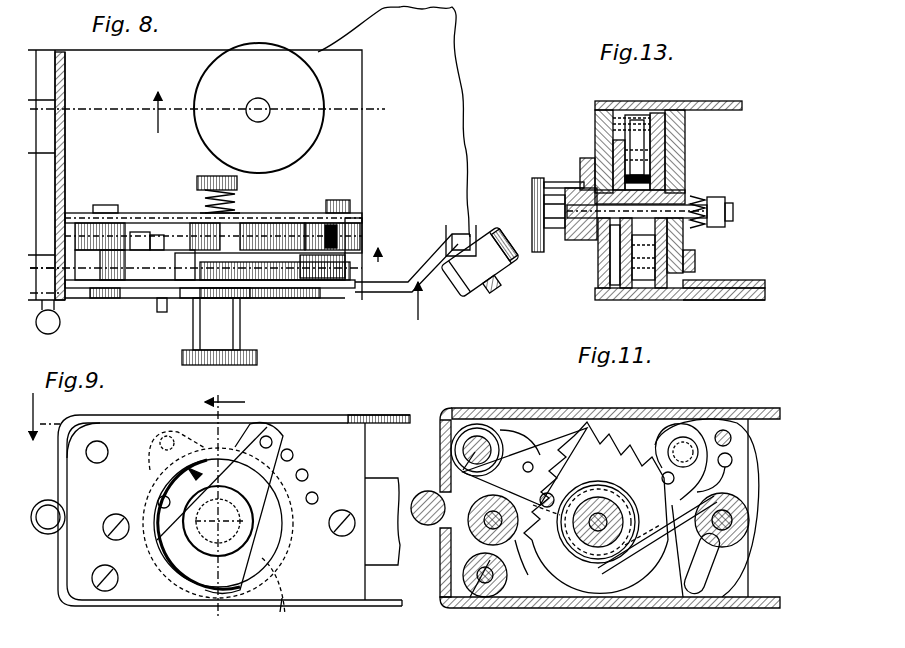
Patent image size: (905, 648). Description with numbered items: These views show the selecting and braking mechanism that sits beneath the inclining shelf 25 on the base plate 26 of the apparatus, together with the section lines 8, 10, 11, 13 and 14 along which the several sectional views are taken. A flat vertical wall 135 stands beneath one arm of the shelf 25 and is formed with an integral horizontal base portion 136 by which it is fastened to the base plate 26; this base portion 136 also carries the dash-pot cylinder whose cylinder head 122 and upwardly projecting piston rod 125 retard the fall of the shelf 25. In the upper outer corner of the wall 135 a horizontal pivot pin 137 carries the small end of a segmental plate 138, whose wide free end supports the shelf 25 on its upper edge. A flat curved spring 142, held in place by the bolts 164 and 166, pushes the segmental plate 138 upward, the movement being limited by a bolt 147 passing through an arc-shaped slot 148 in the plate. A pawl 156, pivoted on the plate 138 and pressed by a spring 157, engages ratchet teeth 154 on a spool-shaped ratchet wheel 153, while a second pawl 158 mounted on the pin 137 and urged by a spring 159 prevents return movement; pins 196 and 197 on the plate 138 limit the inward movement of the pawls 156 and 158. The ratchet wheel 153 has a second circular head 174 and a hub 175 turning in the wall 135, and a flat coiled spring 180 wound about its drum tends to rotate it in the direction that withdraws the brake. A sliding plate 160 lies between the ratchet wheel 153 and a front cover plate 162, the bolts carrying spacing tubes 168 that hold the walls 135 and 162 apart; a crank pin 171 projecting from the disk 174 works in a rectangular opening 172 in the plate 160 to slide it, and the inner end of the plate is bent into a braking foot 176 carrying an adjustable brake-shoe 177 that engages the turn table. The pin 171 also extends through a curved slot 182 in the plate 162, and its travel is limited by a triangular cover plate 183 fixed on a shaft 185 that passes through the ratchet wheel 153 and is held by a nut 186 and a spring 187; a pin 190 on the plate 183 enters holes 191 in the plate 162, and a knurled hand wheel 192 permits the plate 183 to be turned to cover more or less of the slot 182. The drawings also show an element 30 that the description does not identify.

In FIG. 9, the section line 8 is at (40, 416).
In FIG. 8, the section line 10 is at (412, 297).
In FIG. 8, the section line 11 is at (387, 258).
In FIG. 9, the section line 13 is at (225, 495).
In FIG. 8, the section line 14 is at (156, 110).
In FIG. 13, the shelf 25 is at (696, 101).
In FIG. 9, the shelf 25 is at (370, 415).
In FIG. 11, the shelf 25 is at (766, 409).
In FIG. 8, the base plate 26 is at (394, 121).
In FIG. 13, the base plate 26 is at (718, 300).
In FIG. 9, the base plate 26 is at (345, 607).
In FIG. 11, the base plate 26 is at (748, 602).
In FIG. 8, the knob 30 is at (50, 328).
In FIG. 9, the knob 30 is at (46, 533).
In FIG. 11, the knob 30 is at (428, 492).
In FIG. 8, the cylinder head 122 is at (259, 108).
In FIG. 8, the piston rod 125 is at (258, 100).
In FIG. 8, the wall 135 is at (300, 213).
In FIG. 13, the wall 135 is at (682, 152).
In FIG. 8, the supporting base portion 136 is at (350, 152).
In FIG. 13, the supporting base portion 136 is at (736, 280).
In FIG. 9, the pivot pin 137 is at (98, 441).
In FIG. 11, the pivot pin 137 is at (465, 425).
In FIG. 13, the segmental plate 138 is at (730, 101).
In FIG. 11, the segmental plate 138 is at (640, 435).
In FIG. 11, the flat curved spring 142 is at (527, 566).
In FIG. 8, the bolt 147 is at (350, 210).
In FIG. 9, the bolt 147 is at (340, 510).
In FIG. 11, the bolt 147 is at (750, 522).
In FIG. 11, the arc-shaped slot 148 is at (722, 572).
In FIG. 8, the ratchet wheel 153 is at (248, 225).
In FIG. 13, the ratchet wheel 153 is at (683, 306).
In FIG. 11, the ratchet wheel 153 is at (598, 533).
In FIG. 11, the ratchet teeth 154 is at (600, 440).
In FIG. 8, the pawl 156 is at (285, 240).
In FIG. 11, the pawl 156 is at (748, 468).
In FIG. 8, the spring 157 is at (330, 255).
In FIG. 11, the spring 157 is at (735, 460).
In FIG. 8, the second pawl 158 is at (88, 238).
In FIG. 13, the second pawl 158 is at (657, 120).
In FIG. 11, the second pawl 158 is at (490, 428).
In FIG. 8, the spring 159 is at (128, 250).
In FIG. 13, the spring 159 is at (643, 140).
In FIG. 11, the spring 159 is at (522, 440).
In FIG. 8, the sliding plate 160 is at (148, 285).
In FIG. 13, the sliding plate 160 is at (597, 122).
In FIG. 9, the sliding plate 160 is at (385, 485).
In FIG. 8, the front cover plate 162 is at (343, 300).
In FIG. 13, the front cover plate 162 is at (602, 148).
In FIG. 9, the front cover plate 162 is at (234, 510).
In FIG. 9, the bolt 164 is at (108, 518).
In FIG. 11, the bolt 164 is at (485, 528).
In FIG. 9, the bolt 166 is at (102, 590).
In FIG. 11, the bolt 166 is at (471, 593).
In FIG. 8, the spacing tubes 168 is at (152, 235).
In FIG. 13, the spacing tubes 168 is at (606, 300).
In FIG. 11, the spacing tubes 168 is at (478, 570).
In FIG. 8, the crank pin 171 is at (162, 313).
In FIG. 13, the crank pin 171 is at (545, 204).
In FIG. 9, the crank pin 171 is at (158, 499).
In FIG. 11, the crank pin 171 is at (568, 498).
In FIG. 9, the rectangular opening 172 is at (172, 480).
In FIG. 8, the circular disk 174 is at (219, 331).
In FIG. 13, the circular disk 174 is at (630, 300).
In FIG. 9, the circular disk 174 is at (282, 600).
In FIG. 13, the hub 175 is at (695, 245).
In FIG. 8, the braking foot 176 is at (425, 232).
In FIG. 8, the brake-shoe 177 is at (506, 262).
In FIG. 8, the flat coiled spring 180 is at (298, 255).
In FIG. 13, the flat coiled spring 180 is at (636, 150).
In FIG. 11, the flat coiled spring 180 is at (636, 546).
In FIG. 9, the curved slot 182 is at (220, 452).
In FIG. 8, the triangular cover plate 183 is at (185, 302).
In FIG. 13, the triangular cover plate 183 is at (580, 178).
In FIG. 9, the triangular cover plate 183 is at (218, 531).
In FIG. 8, the shaft 185 is at (205, 196).
In FIG. 13, the shaft 185 is at (690, 196).
In FIG. 11, the shaft 185 is at (637, 542).
In FIG. 13, the nut 186 is at (727, 208).
In FIG. 13, the spring 187 is at (703, 198).
In FIG. 8, the pin 190 is at (256, 295).
In FIG. 9, the pin 190 is at (268, 435).
In FIG. 9, the holes 191 is at (305, 468).
In FIG. 8, the knurled hand wheel 192 is at (245, 327).
In FIG. 13, the knurled hand wheel 192 is at (535, 180).
In FIG. 9, the knurled hand wheel 192 is at (248, 524).
In FIG. 11, the pin 196 is at (680, 435).
In FIG. 11, the pin 197 is at (500, 490).